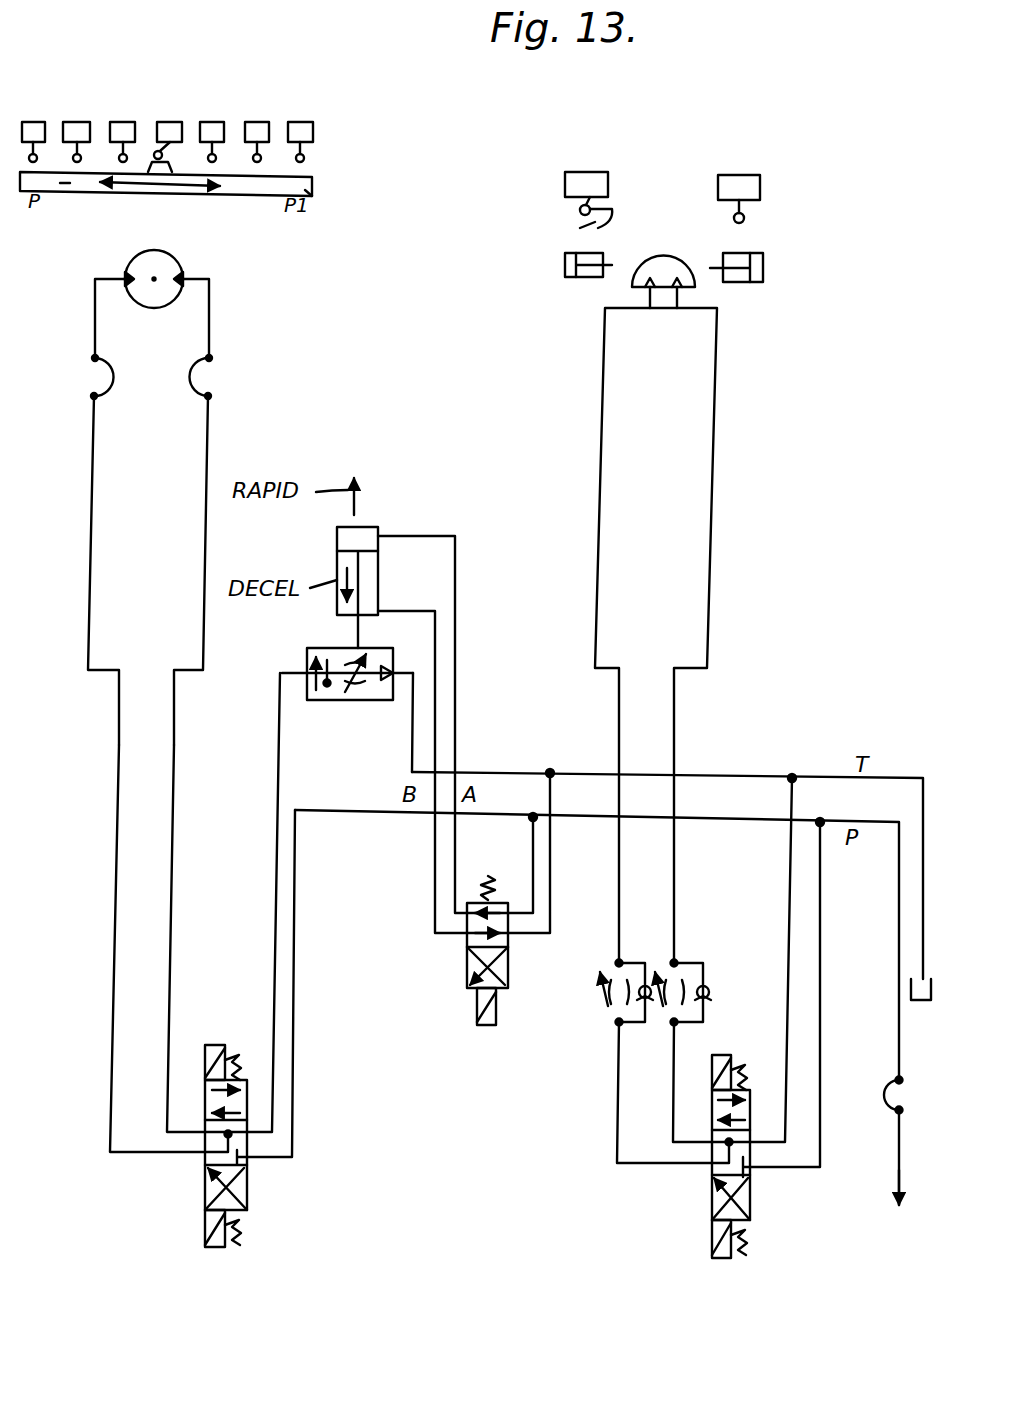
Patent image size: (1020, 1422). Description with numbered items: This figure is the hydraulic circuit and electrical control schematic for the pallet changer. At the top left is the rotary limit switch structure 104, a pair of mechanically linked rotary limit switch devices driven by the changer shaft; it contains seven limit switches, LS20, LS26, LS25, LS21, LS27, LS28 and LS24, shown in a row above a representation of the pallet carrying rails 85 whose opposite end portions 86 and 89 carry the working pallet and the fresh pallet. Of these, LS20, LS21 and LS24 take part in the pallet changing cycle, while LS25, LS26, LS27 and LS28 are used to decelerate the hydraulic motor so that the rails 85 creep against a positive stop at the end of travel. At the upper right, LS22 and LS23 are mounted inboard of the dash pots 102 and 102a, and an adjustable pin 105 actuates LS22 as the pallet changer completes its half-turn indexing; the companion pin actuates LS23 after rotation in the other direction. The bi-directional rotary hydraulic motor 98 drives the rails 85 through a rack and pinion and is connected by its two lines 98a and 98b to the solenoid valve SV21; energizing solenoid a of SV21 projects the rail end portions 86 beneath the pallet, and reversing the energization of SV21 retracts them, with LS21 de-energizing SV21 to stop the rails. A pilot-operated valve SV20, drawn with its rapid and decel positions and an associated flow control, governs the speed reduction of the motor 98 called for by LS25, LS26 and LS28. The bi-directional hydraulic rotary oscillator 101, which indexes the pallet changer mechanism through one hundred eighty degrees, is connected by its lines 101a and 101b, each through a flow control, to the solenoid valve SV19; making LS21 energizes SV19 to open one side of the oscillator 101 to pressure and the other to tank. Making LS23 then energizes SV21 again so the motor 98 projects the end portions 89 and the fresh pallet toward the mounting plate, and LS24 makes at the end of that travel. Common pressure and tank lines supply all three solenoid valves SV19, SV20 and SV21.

The limit switch LS20 is at (35, 122).
The limit switch LS21 is at (168, 122).
The limit switch LS22 is at (590, 172).
The limit switch LS23 is at (744, 175).
The limit switch LS24 is at (311, 122).
The limit switch LS25 is at (120, 122).
The limit switch LS26 is at (78, 122).
The limit switch LS27 is at (213, 122).
The limit switch LS28 is at (257, 122).
The limit switch structure 104 is at (340, 147).
The pallet carrying rails 85 is at (313, 185).
The rail end portion 86 is at (66, 185).
The rail end portion 89 is at (312, 197).
The adjustable pin 105 is at (580, 228).
The bi-directional hydraulic rotary oscillator 101 is at (660, 260).
The rotary oscillator line 101a is at (619, 708).
The rotary oscillator line 101b is at (675, 712).
The dash pot 102 is at (566, 280).
The dash pot 102a is at (745, 283).
The bi-directional rotary hydraulic motor 98 is at (150, 308).
The hydraulic motor line 98a is at (118, 738).
The hydraulic motor line 98b is at (175, 710).
The solenoid valve SV19 is at (752, 1200).
The solenoid valve SV20 is at (508, 970).
The solenoid valve SV21 is at (250, 1190).